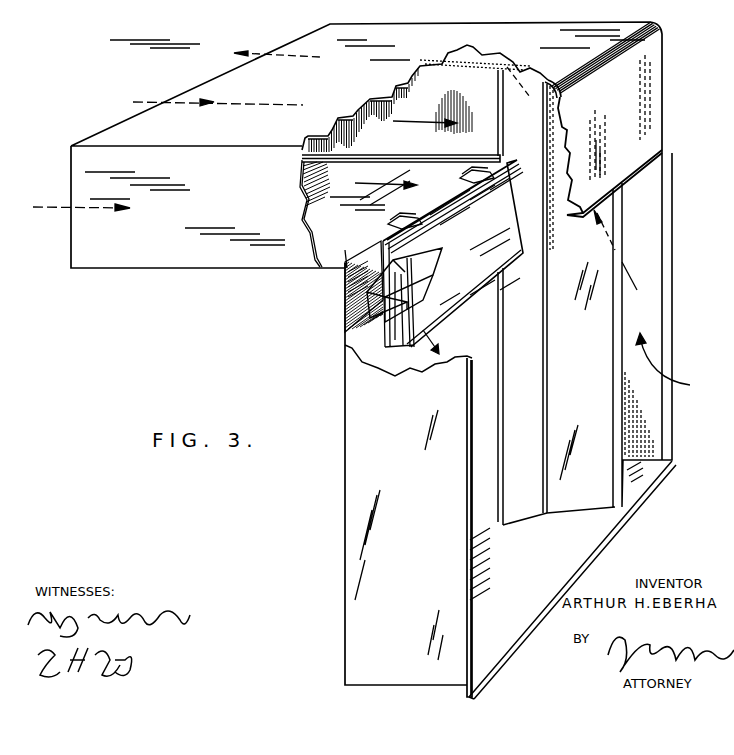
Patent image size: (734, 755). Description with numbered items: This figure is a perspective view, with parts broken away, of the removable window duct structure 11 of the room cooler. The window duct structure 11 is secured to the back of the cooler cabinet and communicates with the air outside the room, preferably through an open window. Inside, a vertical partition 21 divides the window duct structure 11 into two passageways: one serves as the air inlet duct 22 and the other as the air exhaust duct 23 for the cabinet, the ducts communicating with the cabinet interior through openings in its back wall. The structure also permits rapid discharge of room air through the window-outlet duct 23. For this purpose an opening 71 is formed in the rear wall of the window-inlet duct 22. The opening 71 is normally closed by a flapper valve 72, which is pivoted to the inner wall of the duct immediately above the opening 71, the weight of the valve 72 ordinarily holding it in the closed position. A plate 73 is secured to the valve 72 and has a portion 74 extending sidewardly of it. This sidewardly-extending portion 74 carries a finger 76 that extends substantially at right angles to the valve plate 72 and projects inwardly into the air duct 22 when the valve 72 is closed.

The window duct structure 11 is at (183, 307).
The vertical partition 21 is at (600, 485).
The air inlet duct 22 is at (320, 234).
The air exhaust duct 23 is at (447, 62).
The opening 71 is at (412, 327).
The flapper valve 72 is at (468, 298).
The plate 73 is at (412, 290).
The sidewardly-extending portion 74 is at (383, 307).
The finger 76 is at (437, 263).